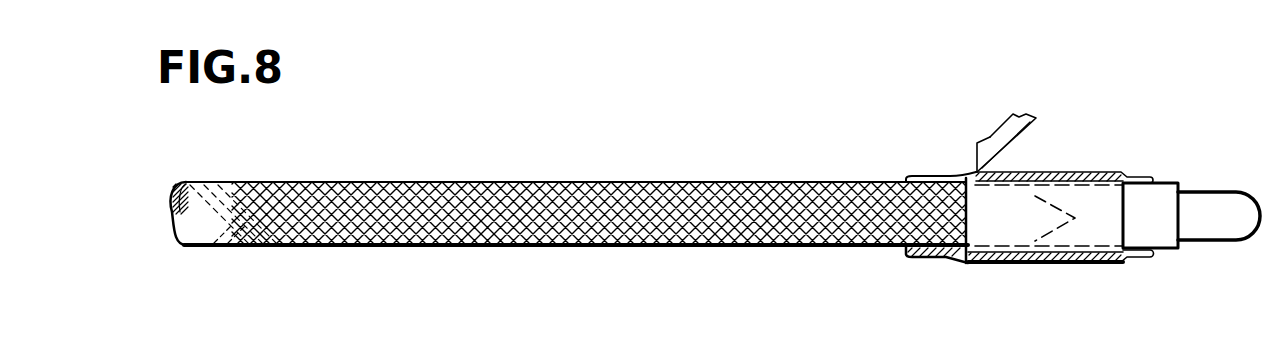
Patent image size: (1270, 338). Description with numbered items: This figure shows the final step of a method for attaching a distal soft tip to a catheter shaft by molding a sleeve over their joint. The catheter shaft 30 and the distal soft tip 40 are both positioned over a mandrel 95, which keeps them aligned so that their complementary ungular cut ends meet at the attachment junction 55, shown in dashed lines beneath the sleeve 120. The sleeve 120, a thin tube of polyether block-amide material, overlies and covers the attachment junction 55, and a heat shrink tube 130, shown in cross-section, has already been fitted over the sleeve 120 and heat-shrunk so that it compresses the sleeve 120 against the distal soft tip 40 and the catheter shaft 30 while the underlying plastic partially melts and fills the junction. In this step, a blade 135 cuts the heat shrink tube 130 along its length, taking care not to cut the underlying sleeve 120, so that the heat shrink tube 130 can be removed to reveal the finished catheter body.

The catheter shaft 30 is at (359, 198).
The blade 135 is at (1000, 135).
The sleeve 120 is at (1013, 207).
The mandrel 95 is at (1203, 215).
The distal soft tip 40 is at (1142, 222).
The heat shrink tube 130 is at (967, 263).
The attachment junction 55 is at (1063, 233).